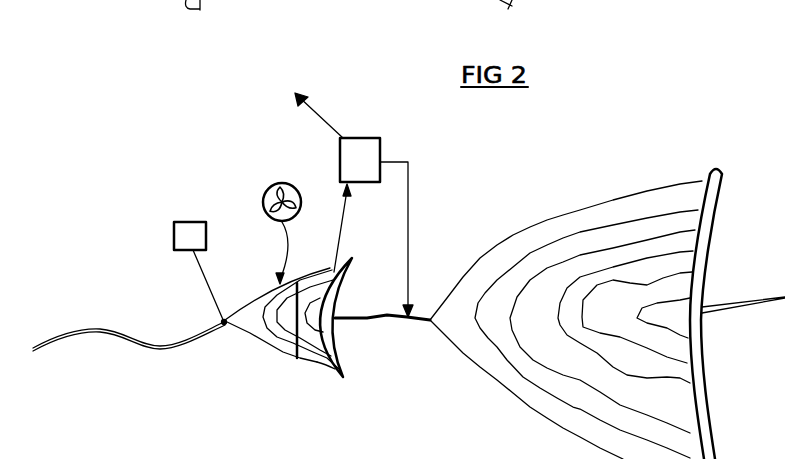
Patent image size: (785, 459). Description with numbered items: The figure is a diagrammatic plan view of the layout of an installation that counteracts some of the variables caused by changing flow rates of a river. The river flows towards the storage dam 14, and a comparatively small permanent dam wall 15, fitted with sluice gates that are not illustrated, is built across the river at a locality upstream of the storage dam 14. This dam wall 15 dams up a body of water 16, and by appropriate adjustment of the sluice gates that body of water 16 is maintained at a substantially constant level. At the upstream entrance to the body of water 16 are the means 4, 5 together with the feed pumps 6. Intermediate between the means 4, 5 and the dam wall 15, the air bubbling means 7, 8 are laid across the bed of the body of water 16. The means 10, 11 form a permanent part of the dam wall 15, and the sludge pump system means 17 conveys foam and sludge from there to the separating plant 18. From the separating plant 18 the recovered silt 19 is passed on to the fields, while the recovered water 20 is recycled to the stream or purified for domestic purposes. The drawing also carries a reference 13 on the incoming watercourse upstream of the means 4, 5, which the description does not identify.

The means 4 is at (219, 344).
The means 5 is at (224, 323).
The feed pumps 6 is at (191, 238).
The air bubbling means 7 is at (275, 340).
The air bubbling means 8 is at (277, 183).
The means 10 is at (352, 393).
The means 11 is at (347, 378).
The light beam 13 is at (80, 334).
The storage dam 14 is at (633, 313).
The permanent dam wall 15 is at (337, 340).
The body of water 16 is at (315, 363).
The sludge pump system means 17 is at (347, 208).
The separating plant 18 is at (362, 160).
The recovered silt 19 is at (318, 113).
The recovered water 20 is at (407, 175).